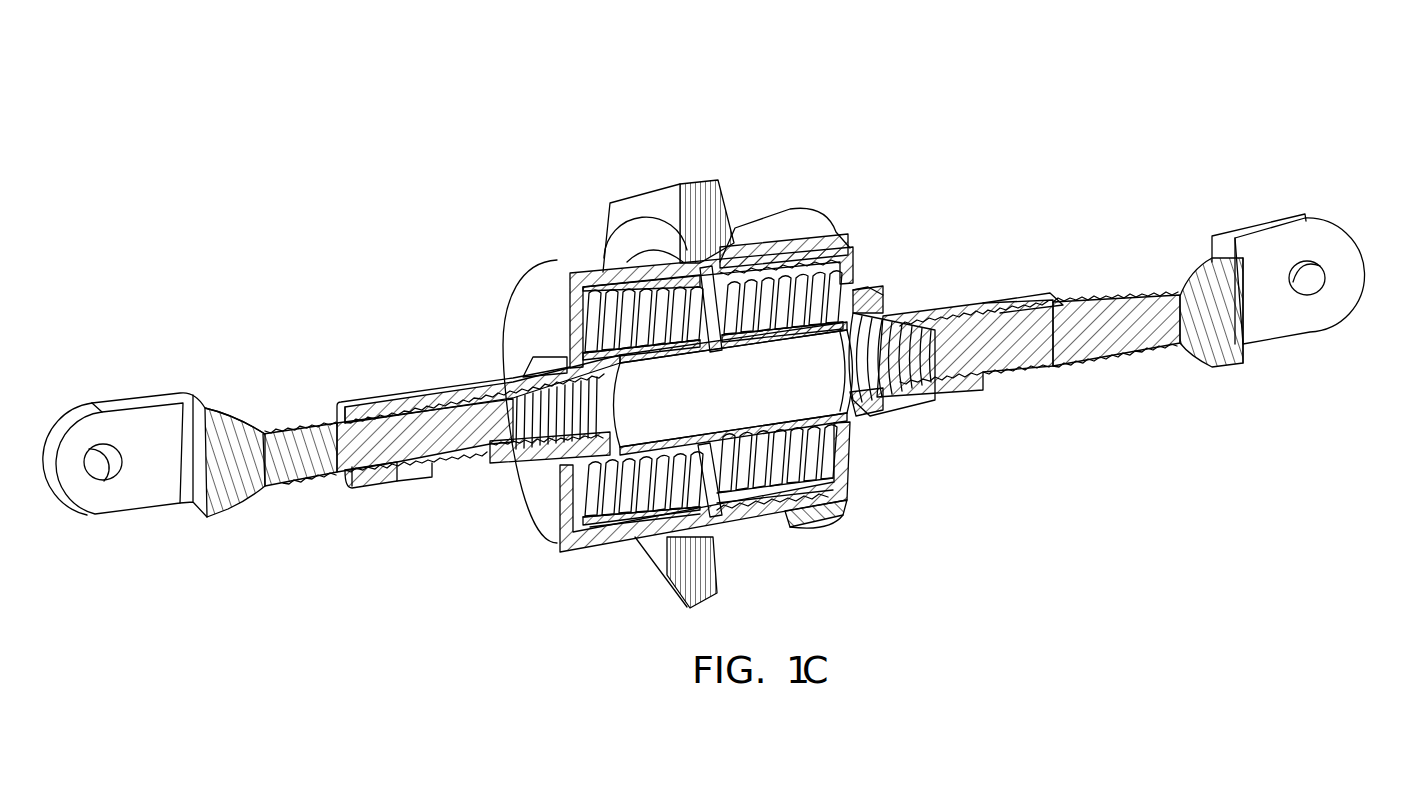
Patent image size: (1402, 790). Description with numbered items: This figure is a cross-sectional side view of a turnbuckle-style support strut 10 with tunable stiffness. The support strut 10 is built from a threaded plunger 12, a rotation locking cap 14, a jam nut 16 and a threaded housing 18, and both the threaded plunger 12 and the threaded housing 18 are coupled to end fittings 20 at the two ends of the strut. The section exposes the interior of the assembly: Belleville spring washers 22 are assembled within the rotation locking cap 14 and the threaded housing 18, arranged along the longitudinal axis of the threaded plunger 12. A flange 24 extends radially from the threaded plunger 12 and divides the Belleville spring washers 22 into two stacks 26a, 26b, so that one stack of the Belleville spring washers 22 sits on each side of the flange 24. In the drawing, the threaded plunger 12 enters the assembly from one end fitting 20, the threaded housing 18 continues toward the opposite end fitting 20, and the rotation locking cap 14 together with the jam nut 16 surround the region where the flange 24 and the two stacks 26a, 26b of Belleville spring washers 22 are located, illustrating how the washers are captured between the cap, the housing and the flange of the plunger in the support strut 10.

The turnbuckle-style support strut 10 is at (708, 126).
The threaded plunger 12 is at (420, 388).
The rotation locking cap 14 is at (520, 284).
The jam nut 16 is at (636, 203).
The threaded housing 18 is at (960, 304).
The end fittings 20 is at (121, 401).
The Belleville spring washers 22 is at (600, 265).
The flange 24 is at (733, 226).
The first stack of Belleville spring washers 26a is at (599, 530).
The second stack of Belleville spring washers 26b is at (763, 497).